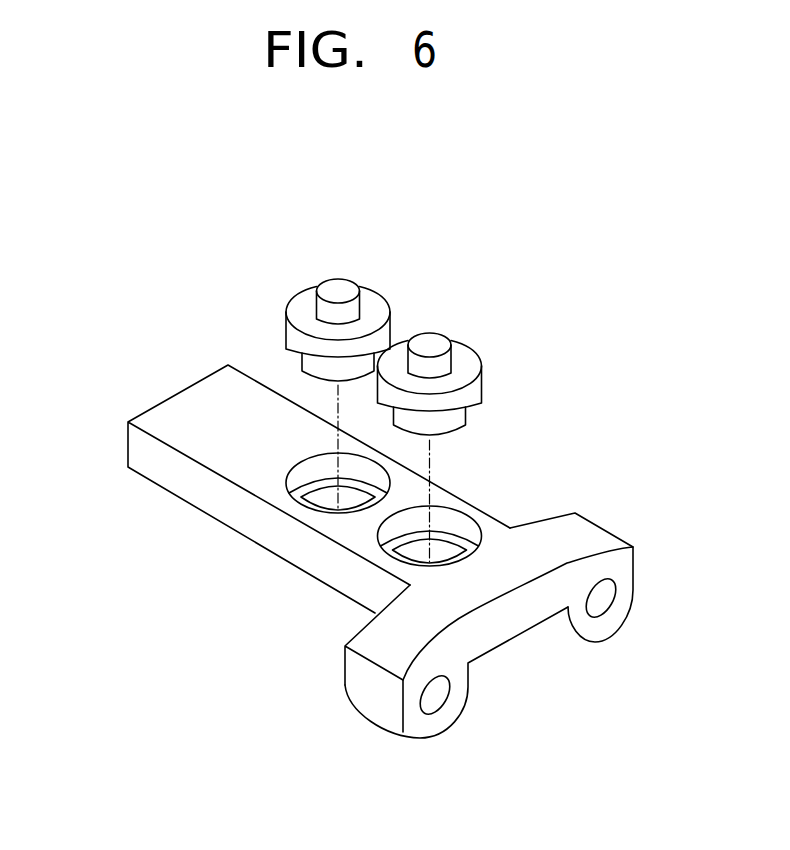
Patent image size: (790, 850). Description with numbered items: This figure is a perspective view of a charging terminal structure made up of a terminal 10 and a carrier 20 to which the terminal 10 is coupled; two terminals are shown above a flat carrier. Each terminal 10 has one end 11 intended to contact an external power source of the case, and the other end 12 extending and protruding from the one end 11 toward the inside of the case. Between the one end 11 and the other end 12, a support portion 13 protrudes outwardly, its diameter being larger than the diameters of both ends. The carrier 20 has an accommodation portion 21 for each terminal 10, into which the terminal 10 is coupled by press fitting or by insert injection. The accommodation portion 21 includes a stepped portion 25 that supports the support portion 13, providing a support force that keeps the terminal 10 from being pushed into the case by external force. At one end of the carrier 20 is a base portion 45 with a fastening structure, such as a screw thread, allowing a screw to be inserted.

The terminal 10 is at (343, 268).
The one end 11 is at (432, 340).
The other end 12 is at (462, 418).
The support portion 13 is at (468, 358).
The carrier 20 is at (153, 402).
The accommodation portion 21 is at (285, 476).
The stepped portion 25 is at (298, 489).
The base portion 45 is at (358, 710).